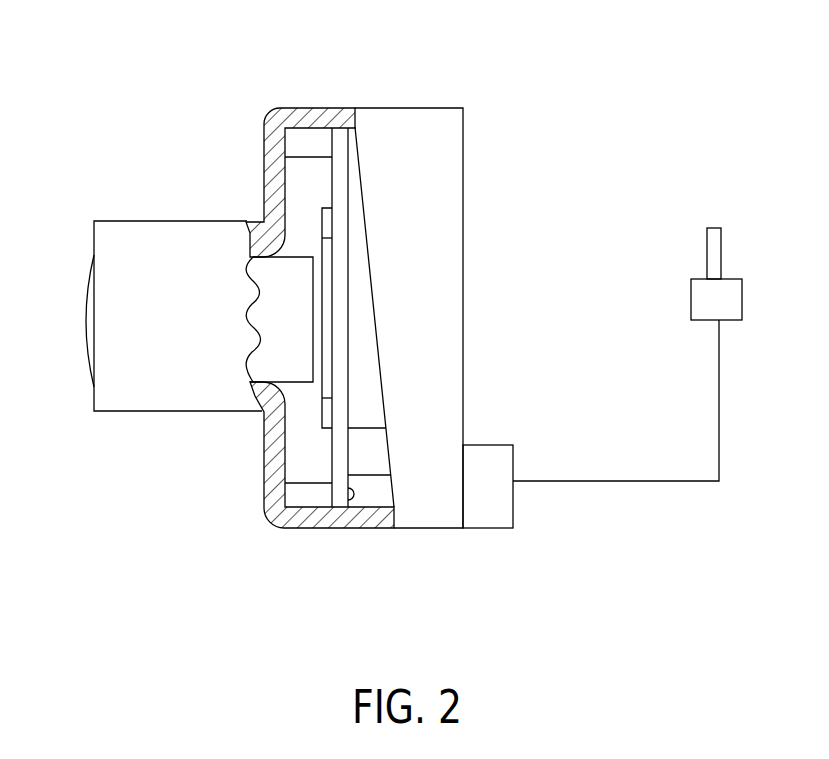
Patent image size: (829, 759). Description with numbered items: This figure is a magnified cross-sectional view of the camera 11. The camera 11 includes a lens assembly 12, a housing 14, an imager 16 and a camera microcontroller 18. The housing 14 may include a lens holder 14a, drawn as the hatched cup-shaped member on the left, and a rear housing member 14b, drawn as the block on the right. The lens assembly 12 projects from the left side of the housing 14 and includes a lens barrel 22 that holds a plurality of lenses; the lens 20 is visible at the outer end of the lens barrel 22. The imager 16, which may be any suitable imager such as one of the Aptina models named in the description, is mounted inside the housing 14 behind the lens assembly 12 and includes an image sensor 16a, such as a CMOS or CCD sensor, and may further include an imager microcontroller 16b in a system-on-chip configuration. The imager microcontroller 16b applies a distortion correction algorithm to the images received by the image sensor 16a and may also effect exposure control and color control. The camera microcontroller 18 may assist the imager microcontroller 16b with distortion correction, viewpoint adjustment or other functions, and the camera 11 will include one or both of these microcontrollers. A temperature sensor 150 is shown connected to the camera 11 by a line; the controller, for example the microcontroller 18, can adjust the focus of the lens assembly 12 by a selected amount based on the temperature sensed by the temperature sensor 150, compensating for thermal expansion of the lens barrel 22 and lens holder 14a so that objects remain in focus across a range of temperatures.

The camera 11 is at (164, 124).
The lens assembly 12 is at (159, 428).
The housing 14 is at (425, 603).
The lens holder 14a is at (283, 534).
The rear housing member 14b is at (415, 530).
The imager 16 is at (322, 402).
The image sensor 16a is at (322, 245).
The imager microcontroller 16b is at (322, 215).
The camera microcontroller 18 is at (332, 448).
The lens 20 is at (84, 325).
The lens barrel 22 is at (133, 220).
The temperature sensor 150 is at (691, 295).